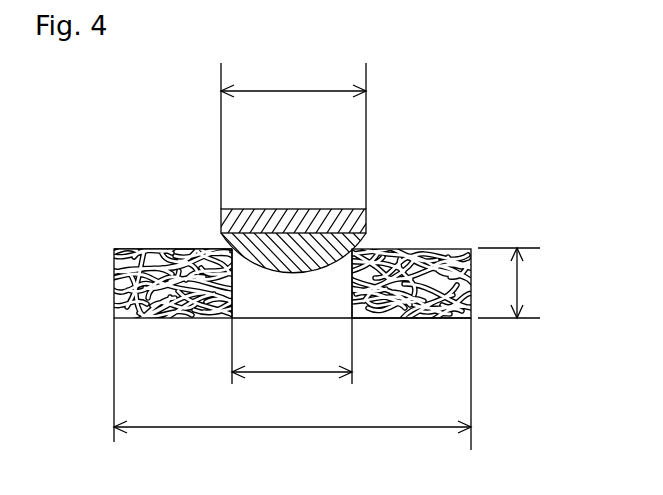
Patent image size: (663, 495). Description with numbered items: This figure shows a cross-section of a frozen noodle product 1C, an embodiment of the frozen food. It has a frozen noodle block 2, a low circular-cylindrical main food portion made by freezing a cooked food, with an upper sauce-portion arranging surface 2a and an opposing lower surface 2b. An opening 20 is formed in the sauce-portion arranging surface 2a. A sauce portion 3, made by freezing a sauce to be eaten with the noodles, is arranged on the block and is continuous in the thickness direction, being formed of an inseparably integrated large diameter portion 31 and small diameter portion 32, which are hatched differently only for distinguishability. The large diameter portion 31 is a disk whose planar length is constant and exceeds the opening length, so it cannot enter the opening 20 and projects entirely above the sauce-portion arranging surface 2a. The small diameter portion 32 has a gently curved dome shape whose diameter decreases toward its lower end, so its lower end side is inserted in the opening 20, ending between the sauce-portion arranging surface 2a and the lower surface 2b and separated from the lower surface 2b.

The frozen noodle product 1C is at (508, 177).
The frozen noodle block 2 is at (437, 248).
The sauce-portion arranging surface 2a is at (168, 250).
The lower surface 2b is at (405, 320).
The sauce portion 3 is at (331, 142).
The large diameter portion 31 is at (269, 222).
The small diameter portion 32 is at (310, 252).
The opening 20 is at (292, 310).